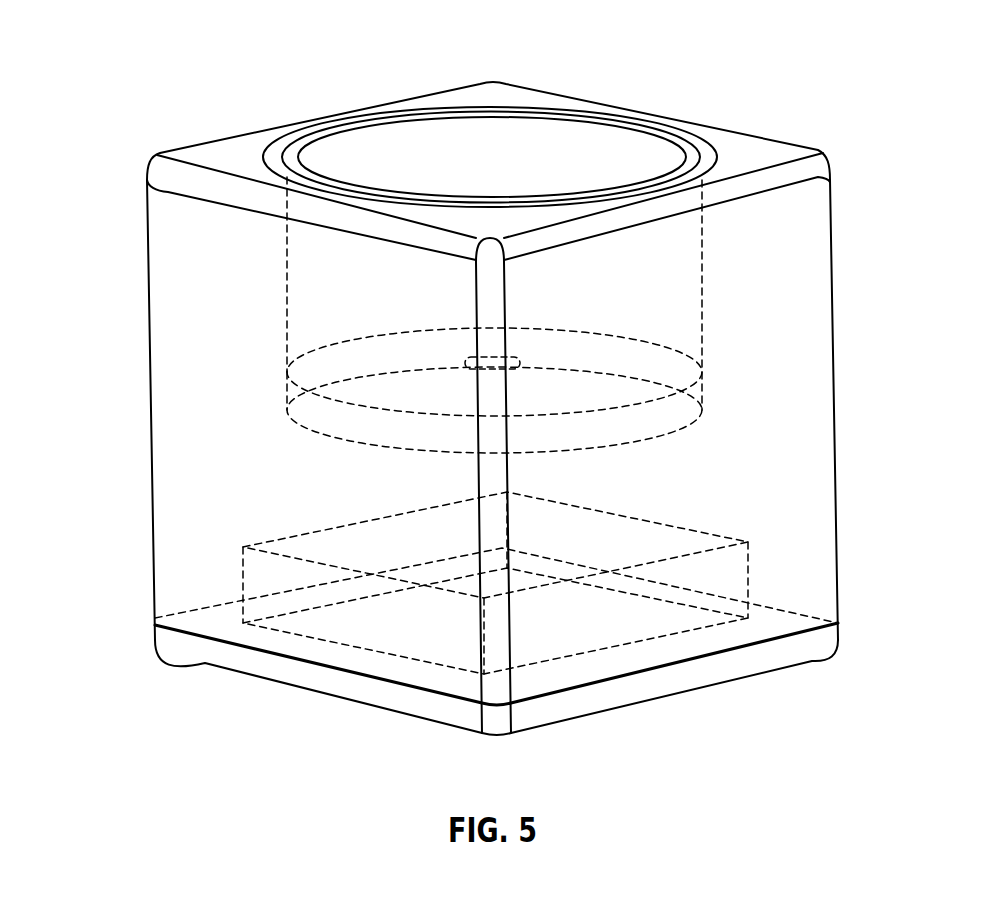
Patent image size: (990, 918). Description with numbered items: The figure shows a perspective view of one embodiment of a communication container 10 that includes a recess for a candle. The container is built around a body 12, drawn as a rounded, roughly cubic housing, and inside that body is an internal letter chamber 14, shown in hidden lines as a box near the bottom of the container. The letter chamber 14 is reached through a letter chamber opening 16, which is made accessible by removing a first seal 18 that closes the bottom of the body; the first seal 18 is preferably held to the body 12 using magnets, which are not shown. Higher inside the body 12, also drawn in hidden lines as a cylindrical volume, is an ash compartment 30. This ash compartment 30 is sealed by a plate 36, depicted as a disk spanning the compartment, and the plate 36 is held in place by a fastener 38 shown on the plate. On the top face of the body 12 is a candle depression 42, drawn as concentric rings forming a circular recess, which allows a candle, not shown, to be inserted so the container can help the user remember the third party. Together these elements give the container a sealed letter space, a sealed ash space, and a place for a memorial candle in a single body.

The communication container 10 is at (141, 79).
The body 12 is at (790, 248).
The internal letter chamber 14 is at (573, 635).
The letter chamber opening 16 is at (838, 623).
The first seal 18 is at (787, 653).
The ash compartment 30 is at (662, 417).
The plate 36 is at (618, 353).
The fastener 38 is at (515, 362).
The candle depression 42 is at (538, 152).